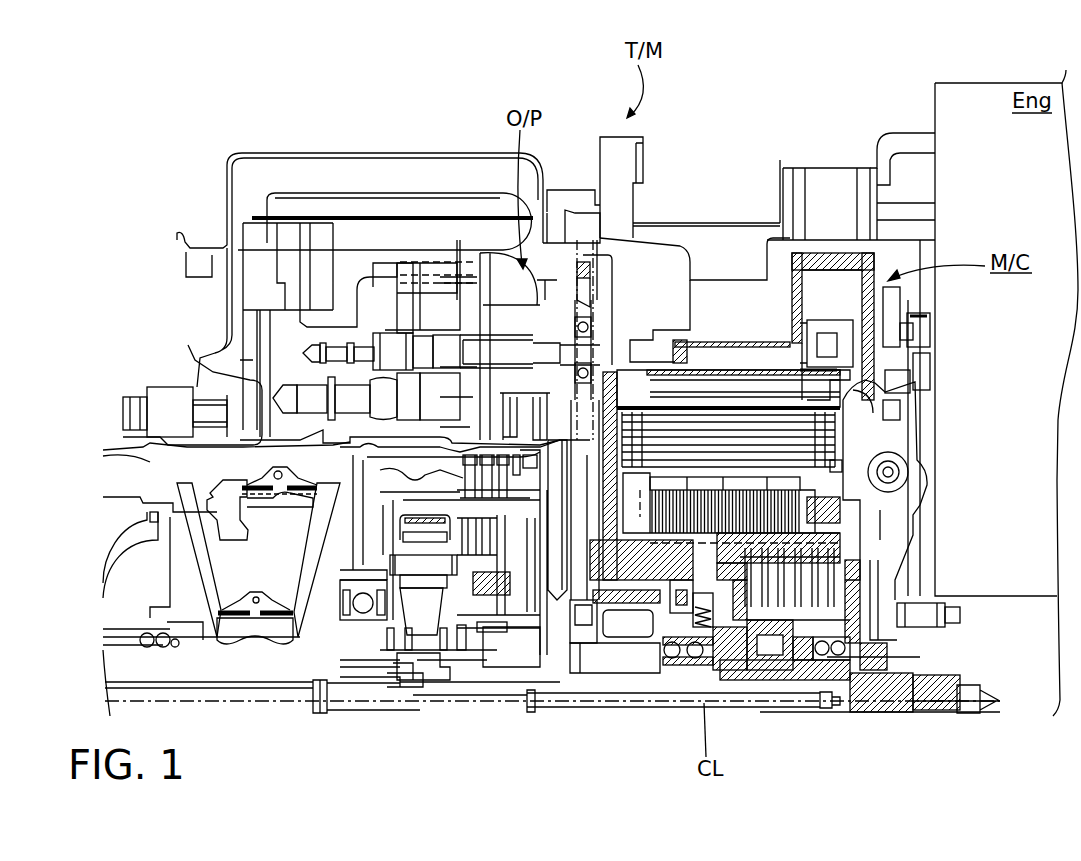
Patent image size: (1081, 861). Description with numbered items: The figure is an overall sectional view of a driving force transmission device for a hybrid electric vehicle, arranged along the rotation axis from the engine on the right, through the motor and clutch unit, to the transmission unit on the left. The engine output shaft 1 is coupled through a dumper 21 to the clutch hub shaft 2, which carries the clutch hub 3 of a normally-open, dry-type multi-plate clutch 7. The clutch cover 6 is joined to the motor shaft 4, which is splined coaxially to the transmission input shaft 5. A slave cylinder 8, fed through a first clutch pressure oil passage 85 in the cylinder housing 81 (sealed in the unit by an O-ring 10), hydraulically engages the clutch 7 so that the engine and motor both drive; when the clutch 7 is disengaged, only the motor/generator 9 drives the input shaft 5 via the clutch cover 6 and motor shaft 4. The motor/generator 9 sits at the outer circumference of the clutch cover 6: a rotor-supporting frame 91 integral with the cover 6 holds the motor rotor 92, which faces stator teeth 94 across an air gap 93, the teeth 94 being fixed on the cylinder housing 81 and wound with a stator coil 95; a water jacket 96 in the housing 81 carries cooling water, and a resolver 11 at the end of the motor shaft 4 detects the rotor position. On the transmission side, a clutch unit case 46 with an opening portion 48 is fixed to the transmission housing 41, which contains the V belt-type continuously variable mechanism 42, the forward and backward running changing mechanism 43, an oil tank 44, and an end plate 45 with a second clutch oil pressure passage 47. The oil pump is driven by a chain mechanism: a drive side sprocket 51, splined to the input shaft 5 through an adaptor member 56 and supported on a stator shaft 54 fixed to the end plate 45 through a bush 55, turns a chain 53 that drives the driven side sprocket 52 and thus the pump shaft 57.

The engine output shaft 1 is at (928, 655).
The clutch hub shaft 2 is at (892, 688).
The clutch hub 3 is at (823, 621).
The motor shaft 4 is at (735, 685).
The transmission input shaft 5 is at (582, 688).
The clutch cover 6 is at (830, 548).
The dry-type multi-plate clutch 7 is at (833, 582).
The slave cylinder 8 is at (647, 625).
The motor/generator 9 is at (988, 306).
The O-ring 10 is at (658, 398).
The resolver 11 is at (657, 652).
The dumper 21 is at (922, 482).
The transmission housing 41 is at (583, 222).
The V belt-type continuously variable mechanism 42 is at (242, 652).
The mechanism for changing a forward and a backward running 43 is at (418, 680).
The oil tank 44 is at (423, 188).
The end plate 45 is at (543, 513).
The clutch unit case 46 is at (628, 218).
The second clutch oil pressure passage 47 is at (543, 482).
The opening portion 48 is at (625, 390).
The drive side sprocket 51 is at (538, 658).
The driven side sprocket 52 is at (596, 306).
The chain 53 is at (573, 407).
The stator shaft 54 is at (540, 663).
The bush 55 is at (588, 656).
The adaptor member 56 is at (623, 592).
The pump shaft 57 is at (482, 355).
The cylinder housing 81 is at (605, 455).
The first clutch pressure oil passage 85 is at (618, 668).
The rotor-supporting frame 91 is at (807, 507).
The motor rotor 92 is at (743, 473).
The air gap 93 is at (860, 430).
The stator teeth 94 is at (880, 372).
The stator coil 95 is at (875, 412).
The water jacket 96 is at (855, 330).